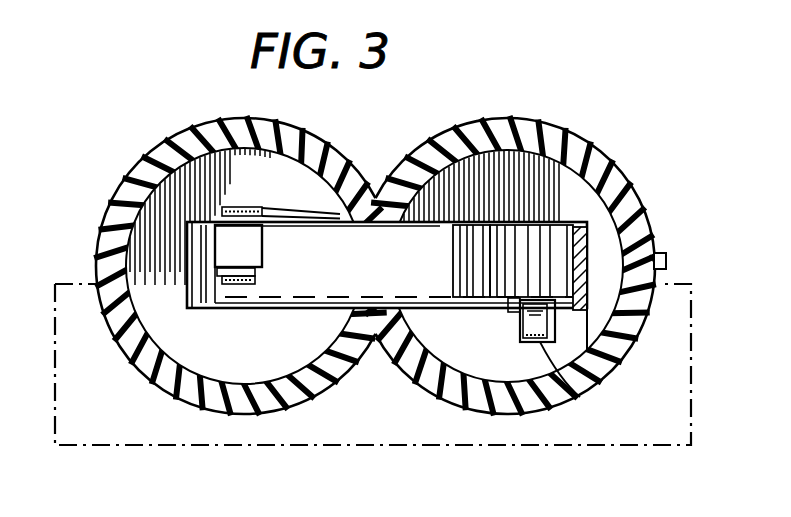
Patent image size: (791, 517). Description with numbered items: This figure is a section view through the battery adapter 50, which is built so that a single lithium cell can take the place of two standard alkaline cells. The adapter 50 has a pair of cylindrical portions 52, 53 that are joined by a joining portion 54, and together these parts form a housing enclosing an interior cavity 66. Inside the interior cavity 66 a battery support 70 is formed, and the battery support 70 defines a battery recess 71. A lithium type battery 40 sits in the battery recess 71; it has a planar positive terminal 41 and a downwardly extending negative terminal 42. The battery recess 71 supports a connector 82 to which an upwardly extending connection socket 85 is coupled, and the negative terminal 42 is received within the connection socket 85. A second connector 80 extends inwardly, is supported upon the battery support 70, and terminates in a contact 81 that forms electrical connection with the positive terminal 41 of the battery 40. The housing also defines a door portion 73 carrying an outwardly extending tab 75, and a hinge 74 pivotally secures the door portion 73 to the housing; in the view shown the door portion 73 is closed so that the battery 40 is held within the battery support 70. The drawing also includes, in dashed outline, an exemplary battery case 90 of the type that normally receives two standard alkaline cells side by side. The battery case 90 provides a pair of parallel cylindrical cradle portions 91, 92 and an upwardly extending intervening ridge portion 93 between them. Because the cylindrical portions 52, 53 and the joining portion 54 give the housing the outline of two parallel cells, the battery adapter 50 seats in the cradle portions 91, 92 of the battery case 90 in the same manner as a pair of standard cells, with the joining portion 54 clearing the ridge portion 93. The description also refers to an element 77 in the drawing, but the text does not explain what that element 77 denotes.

The lithium type battery 40 is at (546, 250).
The planar positive terminal 41 is at (505, 258).
The negative terminal 42 is at (556, 305).
The battery adapter 50 is at (421, 141).
The cylindrical portion 52 is at (691, 289).
The cylindrical portion 53 is at (100, 292).
The joining portion 54 is at (380, 340).
The interior cavity 66 is at (223, 178).
The battery support 70 is at (410, 245).
The battery recess 71 is at (576, 227).
The door portion 73 is at (648, 240).
The hinge 74 is at (97, 268).
The tab 75 is at (668, 260).
The port opening 77 is at (655, 250).
The connector 80 is at (266, 210).
The contact 81 is at (326, 220).
The connector 82 is at (580, 397).
The connection socket 85 is at (556, 322).
The battery case 90 is at (691, 416).
The cylindrical cradle portion 91 is at (517, 410).
The cylindrical cradle portion 92 is at (230, 385).
The intervening ridge portion 93 is at (372, 340).